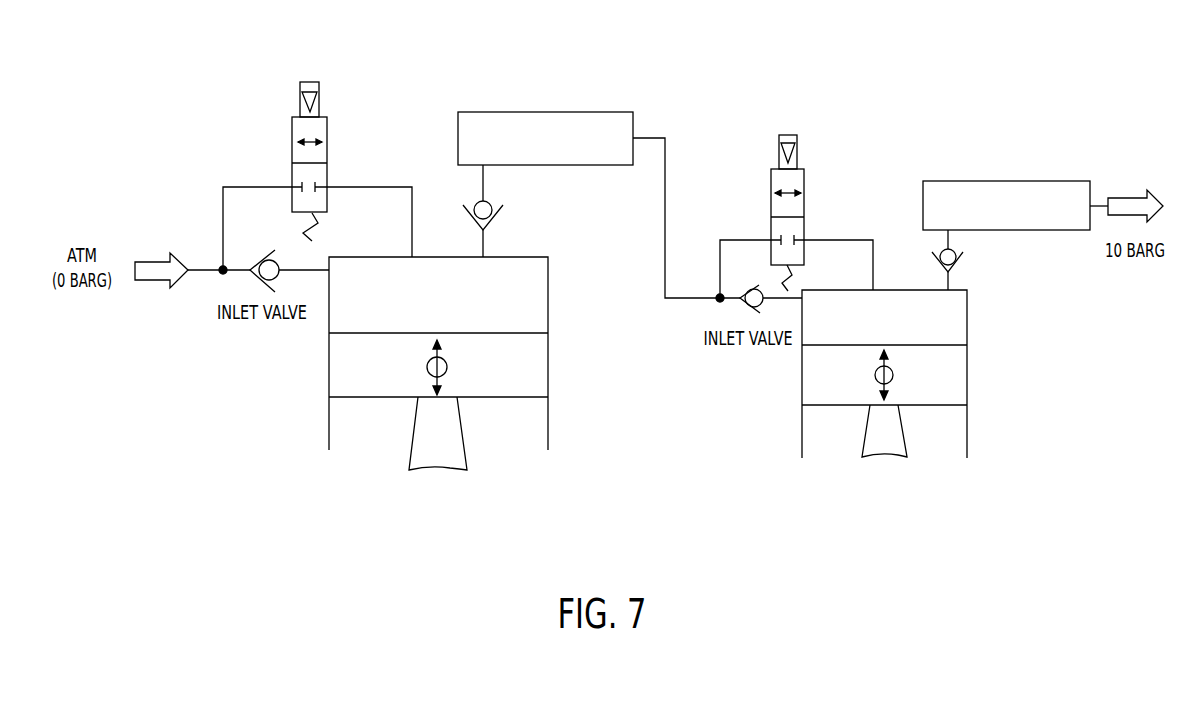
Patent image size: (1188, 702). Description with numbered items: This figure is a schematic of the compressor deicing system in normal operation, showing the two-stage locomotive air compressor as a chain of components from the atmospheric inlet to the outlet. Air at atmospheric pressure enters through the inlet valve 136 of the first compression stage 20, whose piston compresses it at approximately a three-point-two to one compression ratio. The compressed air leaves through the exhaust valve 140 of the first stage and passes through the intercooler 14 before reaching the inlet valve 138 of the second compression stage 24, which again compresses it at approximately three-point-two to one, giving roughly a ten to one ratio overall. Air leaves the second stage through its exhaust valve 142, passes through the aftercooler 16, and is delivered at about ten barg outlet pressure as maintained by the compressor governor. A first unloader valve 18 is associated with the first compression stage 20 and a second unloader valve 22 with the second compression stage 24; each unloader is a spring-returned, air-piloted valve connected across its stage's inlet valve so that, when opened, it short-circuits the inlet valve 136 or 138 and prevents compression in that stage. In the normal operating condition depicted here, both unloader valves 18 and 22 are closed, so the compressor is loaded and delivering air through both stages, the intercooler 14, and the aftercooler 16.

The intercooler 14 is at (545, 112).
The aftercooler 16 is at (1005, 181).
The first unloader valve 18 is at (327, 128).
The first compression stage 20 is at (548, 303).
The second unloader valve 22 is at (804, 185).
The second compression stage 24 is at (967, 327).
The inlet valve 136 is at (263, 250).
The inlet valve 138 is at (748, 283).
The first stage exhaust valve 140 is at (472, 215).
The exhaust valve 142 is at (937, 260).